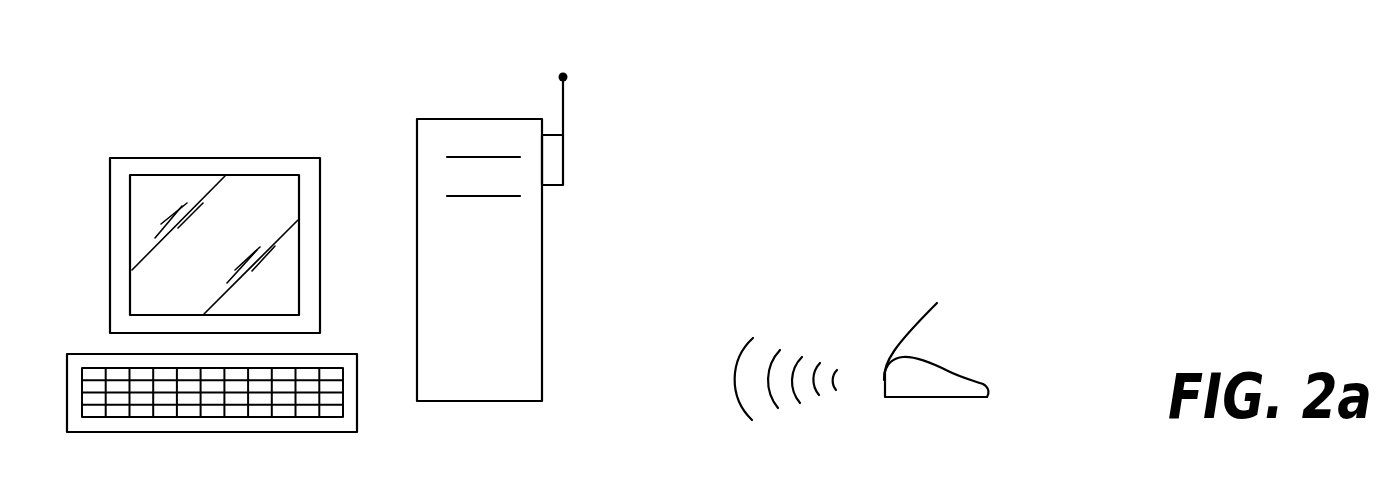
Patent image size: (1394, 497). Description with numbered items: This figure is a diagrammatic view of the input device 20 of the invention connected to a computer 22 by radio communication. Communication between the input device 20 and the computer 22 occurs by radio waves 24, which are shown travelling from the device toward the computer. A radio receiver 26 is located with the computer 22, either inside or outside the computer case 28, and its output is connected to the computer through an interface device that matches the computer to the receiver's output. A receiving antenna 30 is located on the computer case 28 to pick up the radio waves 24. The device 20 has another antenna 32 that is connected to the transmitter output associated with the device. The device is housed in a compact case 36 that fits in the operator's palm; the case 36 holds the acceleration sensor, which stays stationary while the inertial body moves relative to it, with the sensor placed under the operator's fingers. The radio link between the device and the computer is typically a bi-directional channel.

The device 20 is at (966, 361).
The computer 22 is at (333, 117).
The radio waves 24 is at (807, 318).
The radio receiver 26 is at (553, 162).
The computer case 28 is at (542, 243).
The receiving antenna 30 is at (566, 74).
The antenna 32 is at (923, 323).
The case 36 is at (990, 387).